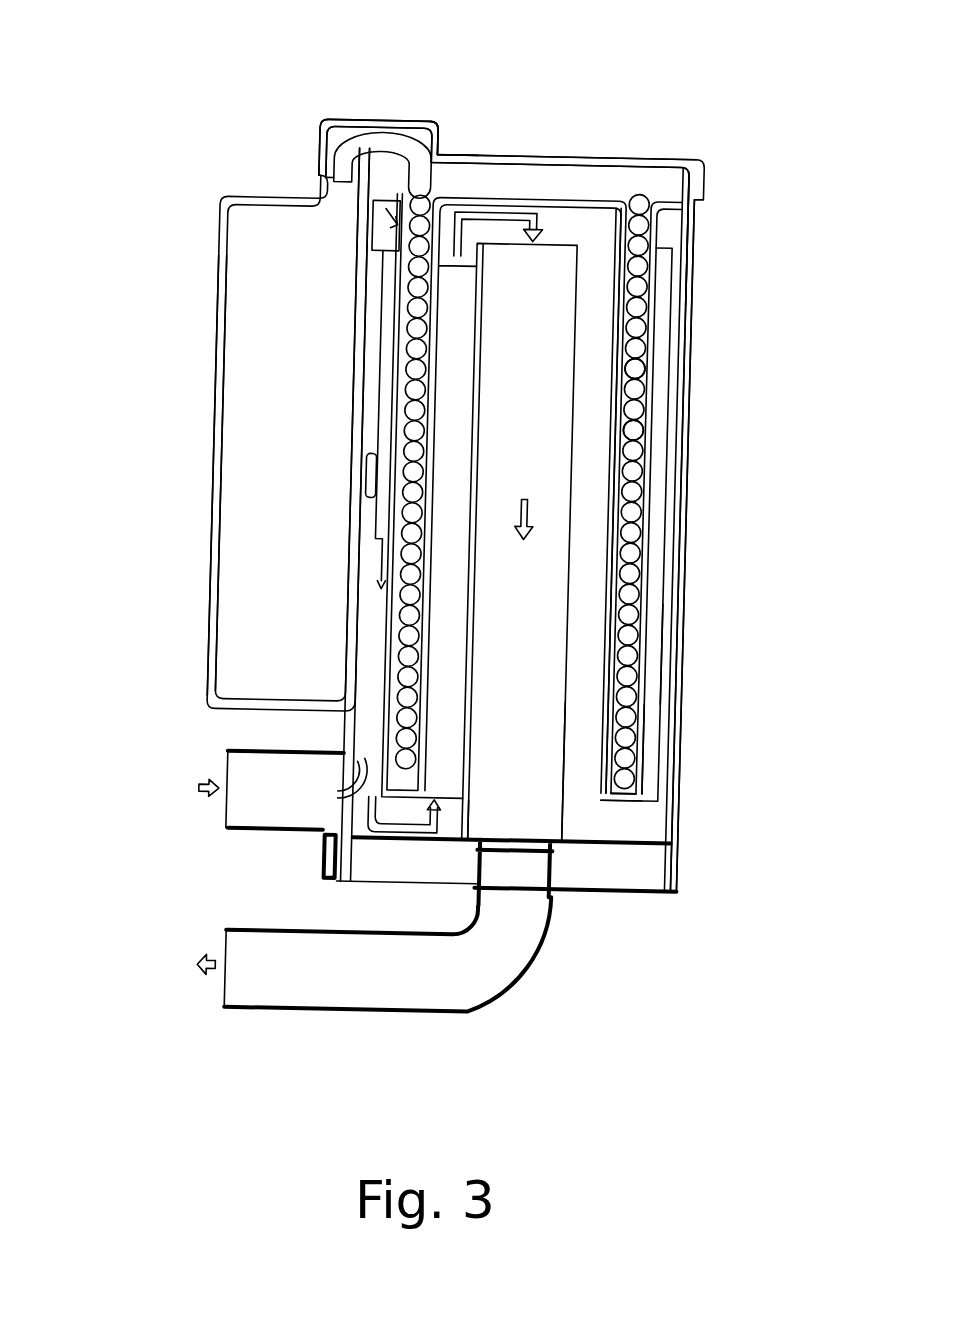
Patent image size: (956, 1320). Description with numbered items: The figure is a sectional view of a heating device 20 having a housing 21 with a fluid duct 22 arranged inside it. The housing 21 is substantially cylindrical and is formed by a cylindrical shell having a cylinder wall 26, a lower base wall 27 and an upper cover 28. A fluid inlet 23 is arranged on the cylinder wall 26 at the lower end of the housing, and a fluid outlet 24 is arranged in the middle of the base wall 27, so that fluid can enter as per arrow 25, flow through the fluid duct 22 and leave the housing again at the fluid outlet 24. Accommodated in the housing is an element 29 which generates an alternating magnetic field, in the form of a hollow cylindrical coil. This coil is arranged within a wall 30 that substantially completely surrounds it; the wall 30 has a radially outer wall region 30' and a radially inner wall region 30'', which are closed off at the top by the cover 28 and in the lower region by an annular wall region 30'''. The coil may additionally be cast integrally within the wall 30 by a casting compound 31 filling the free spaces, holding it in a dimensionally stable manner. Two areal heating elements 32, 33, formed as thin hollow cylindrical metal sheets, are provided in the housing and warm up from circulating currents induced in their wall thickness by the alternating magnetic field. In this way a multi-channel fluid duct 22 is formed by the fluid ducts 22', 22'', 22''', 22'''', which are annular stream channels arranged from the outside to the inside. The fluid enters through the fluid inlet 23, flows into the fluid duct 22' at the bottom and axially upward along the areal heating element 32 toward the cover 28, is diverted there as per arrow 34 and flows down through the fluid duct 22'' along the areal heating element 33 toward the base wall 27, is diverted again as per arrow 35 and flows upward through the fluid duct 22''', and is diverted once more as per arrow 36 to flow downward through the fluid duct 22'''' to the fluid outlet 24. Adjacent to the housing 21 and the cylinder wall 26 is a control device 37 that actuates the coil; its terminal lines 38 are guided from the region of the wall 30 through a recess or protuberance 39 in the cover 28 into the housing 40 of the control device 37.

The heating device 20 is at (152, 166).
The housing 21 is at (476, 149).
The fluid duct 22 is at (621, 544).
The fluid duct 22' is at (721, 666).
The fluid duct 22'' is at (715, 757).
The fluid duct 22''' is at (666, 834).
The fluid duct 22'''' is at (585, 898).
The fluid inlet 23 is at (237, 829).
The fluid outlet 24 is at (322, 1013).
The arrow 25 is at (208, 785).
The cylinder wall 26 is at (340, 857).
The base wall 27 is at (417, 869).
The cover 28 is at (621, 151).
The element which generates an alternating magnetic field 29 is at (634, 368).
The wall 30 is at (698, 492).
The radially outer wall region 30' is at (709, 499).
The radially inner wall region 30'' is at (705, 445).
The wall region 30''' is at (697, 823).
The casting compound 31 is at (646, 314).
The areal heating element 32 is at (671, 609).
The areal heating element 33 is at (471, 653).
The arrow 34 is at (387, 174).
The arrow 35 is at (431, 834).
The arrow 36 is at (505, 206).
The control device 37 is at (252, 389).
The terminal lines 38 is at (344, 125).
The recess or protuberance 39 is at (424, 125).
The housing of the control unit 40 is at (207, 305).